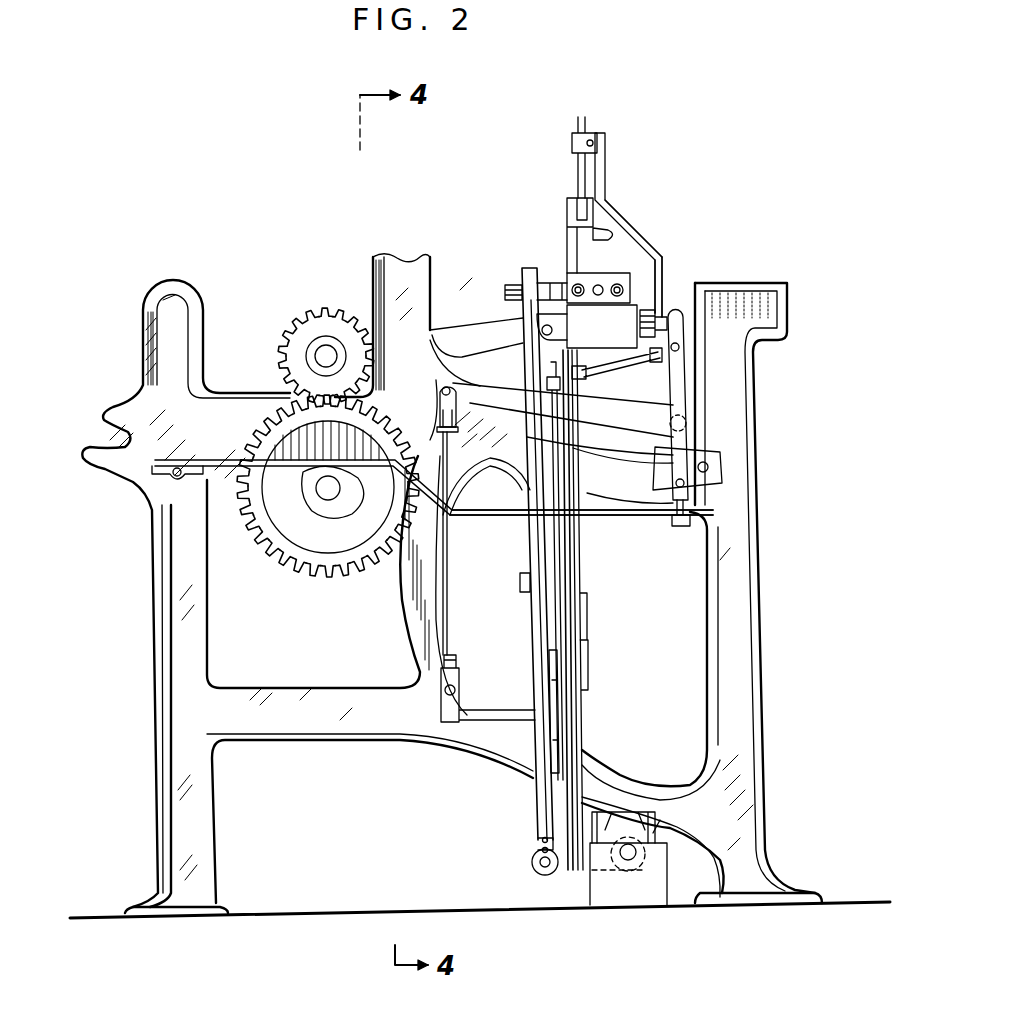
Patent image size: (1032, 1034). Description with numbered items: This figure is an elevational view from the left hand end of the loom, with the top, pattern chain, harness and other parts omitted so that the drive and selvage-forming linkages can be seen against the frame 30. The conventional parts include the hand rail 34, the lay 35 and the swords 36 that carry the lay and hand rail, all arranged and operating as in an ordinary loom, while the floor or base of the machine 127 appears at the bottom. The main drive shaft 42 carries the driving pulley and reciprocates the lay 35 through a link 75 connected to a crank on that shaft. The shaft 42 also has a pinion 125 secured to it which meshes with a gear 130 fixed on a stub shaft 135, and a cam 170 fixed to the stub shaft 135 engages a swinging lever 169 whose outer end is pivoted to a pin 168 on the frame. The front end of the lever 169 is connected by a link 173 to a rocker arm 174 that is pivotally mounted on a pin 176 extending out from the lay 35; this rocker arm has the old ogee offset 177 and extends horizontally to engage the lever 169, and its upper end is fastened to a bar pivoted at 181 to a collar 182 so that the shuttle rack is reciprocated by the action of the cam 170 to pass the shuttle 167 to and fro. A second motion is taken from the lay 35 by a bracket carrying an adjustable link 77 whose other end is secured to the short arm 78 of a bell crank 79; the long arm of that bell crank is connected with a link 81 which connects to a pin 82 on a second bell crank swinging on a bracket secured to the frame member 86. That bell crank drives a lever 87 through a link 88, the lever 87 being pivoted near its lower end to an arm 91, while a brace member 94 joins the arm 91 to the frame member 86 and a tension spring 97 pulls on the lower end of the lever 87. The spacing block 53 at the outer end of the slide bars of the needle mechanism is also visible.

The frame 30 is at (745, 549).
The hand rail 34 is at (577, 210).
The lay 35 is at (571, 315).
The swords 36 is at (578, 614).
The main drive shaft 42 is at (300, 357).
The spacing block 53 is at (607, 276).
The link 75 is at (447, 333).
The adjustable link 77 is at (622, 362).
The short arm 78 is at (688, 380).
The bell crank 79 is at (555, 443).
The link 81 is at (449, 590).
The pin 82 is at (483, 712).
The frame member 86 is at (586, 668).
The lever 87 is at (540, 610).
The link 88 is at (522, 581).
The arm 91 is at (563, 582).
The brace member 94 is at (557, 718).
The tension spring 97 is at (533, 866).
The pinion 125 is at (331, 318).
The base of the machine or floor 127 is at (621, 908).
The gear 130 is at (338, 576).
The stub shaft 135 is at (322, 496).
The shuttle 167 is at (612, 236).
The pin 168 is at (177, 478).
The swinging lever 169 is at (495, 516).
The cam 170 is at (346, 505).
The link 173 is at (680, 460).
The rocker arm 174 is at (664, 276).
The pin 176 is at (660, 311).
The ogee offset 177 is at (630, 225).
The pivot 181 is at (606, 148).
The collar 182 is at (572, 147).